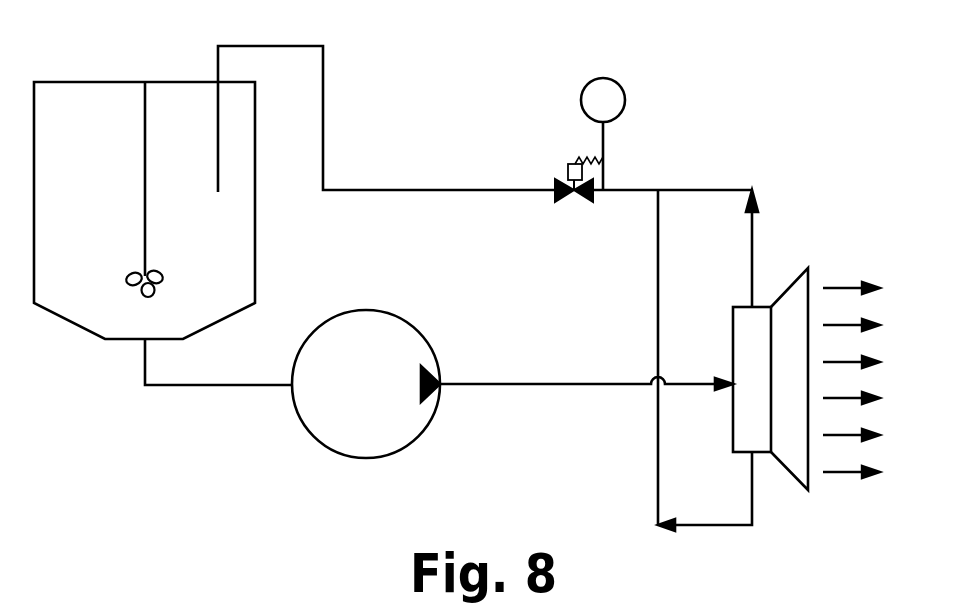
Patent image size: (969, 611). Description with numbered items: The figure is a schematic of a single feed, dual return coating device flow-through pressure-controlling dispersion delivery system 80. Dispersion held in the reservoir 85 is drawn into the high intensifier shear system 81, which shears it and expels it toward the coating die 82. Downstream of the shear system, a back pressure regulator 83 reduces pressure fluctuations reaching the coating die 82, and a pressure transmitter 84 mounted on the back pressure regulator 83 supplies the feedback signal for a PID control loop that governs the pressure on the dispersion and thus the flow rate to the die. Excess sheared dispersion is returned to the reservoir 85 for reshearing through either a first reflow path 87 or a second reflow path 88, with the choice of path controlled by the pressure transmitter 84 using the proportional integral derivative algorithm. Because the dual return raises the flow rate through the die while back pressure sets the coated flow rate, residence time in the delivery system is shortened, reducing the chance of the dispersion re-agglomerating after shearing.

The dispersion delivery system 80 is at (188, 462).
The high intensifier shear system 81 is at (308, 433).
The coating die 82 is at (373, 188).
The back pressure regulator 83 is at (605, 178).
The pressure transmitter 84 is at (625, 93).
The reservoir 85 is at (255, 267).
The first reflow path 87 is at (752, 248).
The second reflow path 88 is at (658, 291).